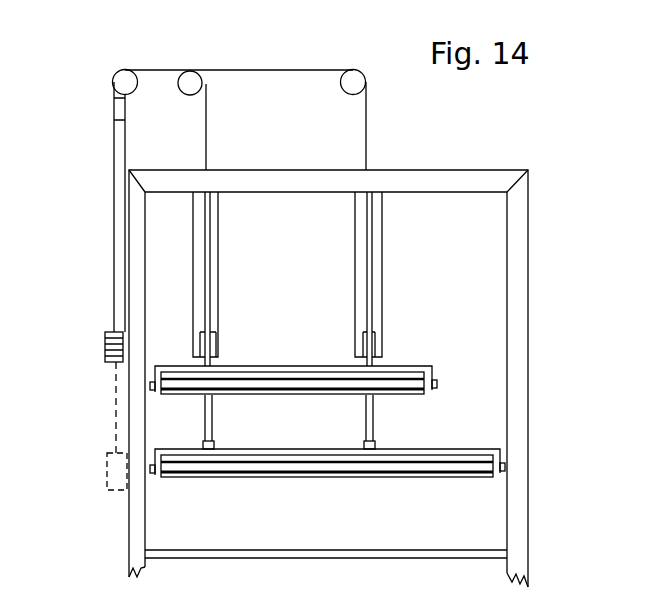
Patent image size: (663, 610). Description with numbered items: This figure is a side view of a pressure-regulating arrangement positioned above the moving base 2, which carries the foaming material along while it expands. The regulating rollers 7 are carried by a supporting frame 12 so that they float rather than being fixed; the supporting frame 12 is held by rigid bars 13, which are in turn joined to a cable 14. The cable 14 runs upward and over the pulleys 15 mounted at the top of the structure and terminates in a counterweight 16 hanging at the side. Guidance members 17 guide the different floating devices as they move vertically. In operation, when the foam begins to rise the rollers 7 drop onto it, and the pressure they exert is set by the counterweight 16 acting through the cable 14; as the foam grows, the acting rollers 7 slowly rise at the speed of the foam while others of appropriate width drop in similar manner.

The moving base 2 is at (443, 557).
The regulating rollers 7 is at (343, 380).
The supporting frame 12 is at (470, 448).
The rigid bars 13 is at (373, 420).
The cable 14 is at (367, 131).
The pulleys 15 is at (120, 86).
The counterweights 16 is at (112, 353).
The guidance members 17 is at (375, 228).